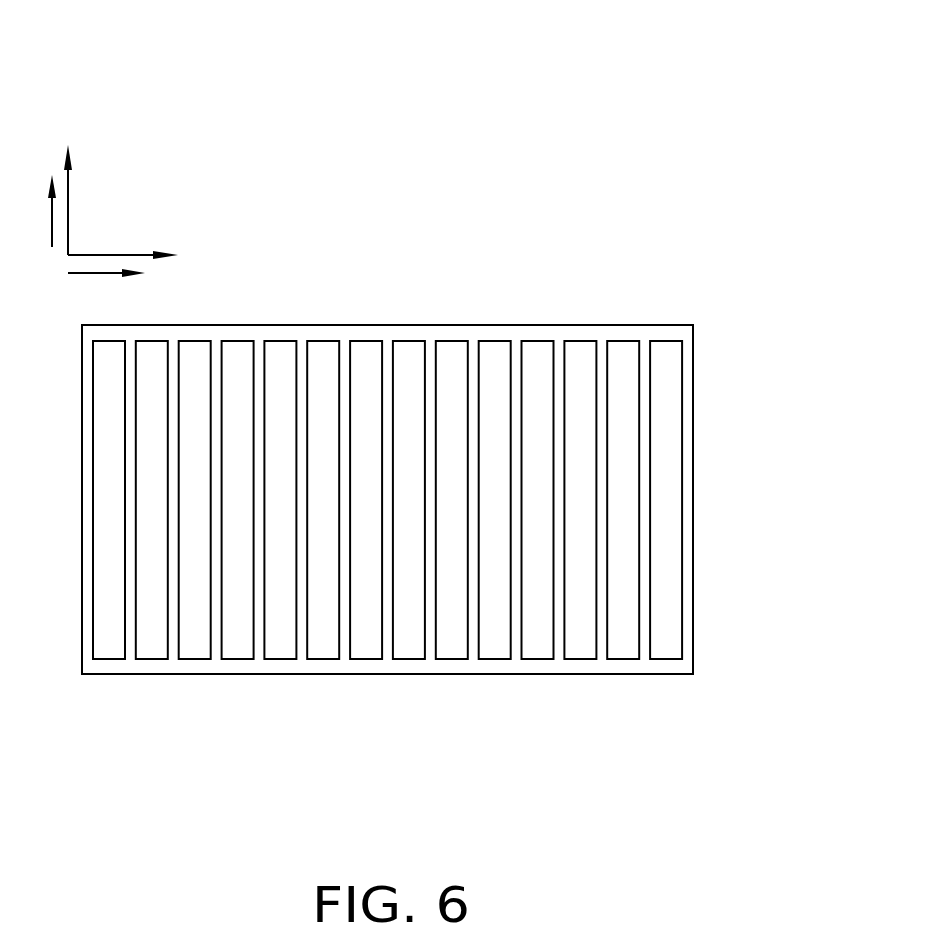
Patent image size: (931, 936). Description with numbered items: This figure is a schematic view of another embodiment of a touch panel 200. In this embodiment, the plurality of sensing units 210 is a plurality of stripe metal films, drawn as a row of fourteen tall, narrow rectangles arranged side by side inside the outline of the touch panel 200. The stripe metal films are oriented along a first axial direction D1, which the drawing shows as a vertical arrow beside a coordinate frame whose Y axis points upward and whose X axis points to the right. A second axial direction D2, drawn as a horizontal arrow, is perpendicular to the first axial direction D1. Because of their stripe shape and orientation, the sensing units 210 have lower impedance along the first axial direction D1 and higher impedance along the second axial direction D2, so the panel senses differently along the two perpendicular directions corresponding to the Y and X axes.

The touch panel 200 is at (445, 93).
The sensing units 210 is at (194, 348).
The first axial direction D1 is at (32, 211).
The second axial direction D2 is at (106, 290).
The X axis X is at (131, 242).
The Y axis Y is at (76, 186).